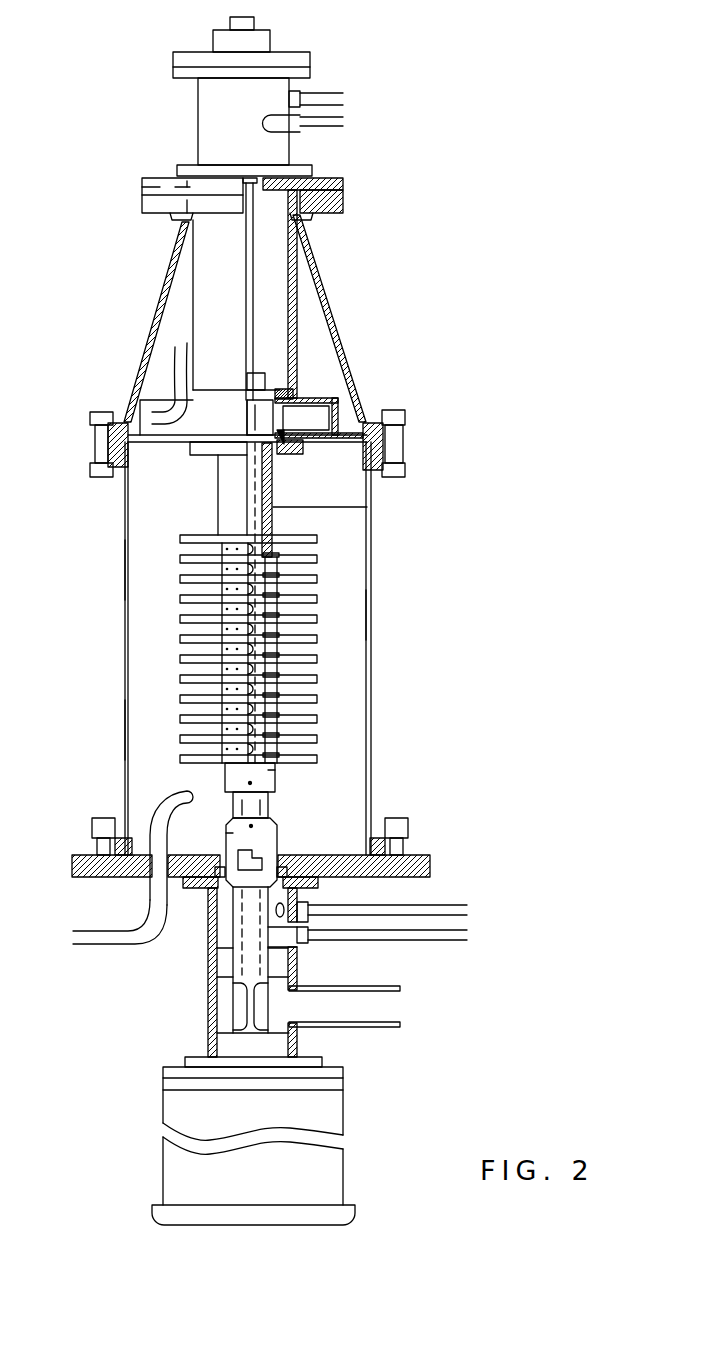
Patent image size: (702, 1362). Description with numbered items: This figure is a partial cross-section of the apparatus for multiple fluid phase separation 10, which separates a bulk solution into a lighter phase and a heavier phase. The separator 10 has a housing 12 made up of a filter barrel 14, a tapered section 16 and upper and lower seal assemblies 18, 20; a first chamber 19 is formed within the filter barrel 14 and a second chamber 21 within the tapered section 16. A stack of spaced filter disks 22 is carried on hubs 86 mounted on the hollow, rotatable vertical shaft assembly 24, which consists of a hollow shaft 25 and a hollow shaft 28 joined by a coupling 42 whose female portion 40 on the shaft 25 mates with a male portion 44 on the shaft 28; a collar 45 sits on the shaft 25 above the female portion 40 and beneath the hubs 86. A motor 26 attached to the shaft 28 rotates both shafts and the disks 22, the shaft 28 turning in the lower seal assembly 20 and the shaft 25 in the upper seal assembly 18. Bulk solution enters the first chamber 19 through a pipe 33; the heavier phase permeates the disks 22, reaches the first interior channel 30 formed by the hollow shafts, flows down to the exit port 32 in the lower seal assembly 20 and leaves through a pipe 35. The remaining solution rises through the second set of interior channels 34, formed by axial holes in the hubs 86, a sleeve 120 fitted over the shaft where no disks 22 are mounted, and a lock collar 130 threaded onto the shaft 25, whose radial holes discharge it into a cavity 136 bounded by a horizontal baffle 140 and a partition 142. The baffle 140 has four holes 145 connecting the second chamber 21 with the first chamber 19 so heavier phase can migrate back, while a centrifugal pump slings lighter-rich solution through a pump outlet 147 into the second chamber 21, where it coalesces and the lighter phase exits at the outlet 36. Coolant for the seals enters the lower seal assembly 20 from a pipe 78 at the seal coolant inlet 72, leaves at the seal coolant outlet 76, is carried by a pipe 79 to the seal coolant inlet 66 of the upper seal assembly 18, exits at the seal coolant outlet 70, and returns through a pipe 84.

The apparatus for multiple fluid phase separation 10 is at (124, 566).
The housing 12 is at (125, 735).
The filter barrel 14 is at (125, 630).
The tapered section 16 is at (152, 318).
The seal assembly 18 is at (198, 122).
The first chamber 19 is at (348, 615).
The seal assembly 20 is at (208, 960).
The second chamber 21 is at (340, 392).
The filter disks 22 is at (317, 578).
The shaft assembly 24 is at (280, 690).
The hollow shaft 25 is at (268, 805).
The motor 26 is at (343, 1117).
The hollow shaft 28 is at (233, 963).
The first interior channel 30 is at (240, 783).
The exit port 32 is at (233, 1007).
The pipe 33 is at (85, 945).
The second set of interior channels 34 is at (367, 507).
The pipe 35 is at (385, 1027).
The outlet 36 is at (142, 187).
The female portion 40 is at (278, 828).
The coupling 42 is at (226, 833).
The male portion 44 is at (250, 867).
The collar 45 is at (275, 777).
The seal coolant inlet 66 is at (300, 132).
The seal coolant outlet 70 is at (296, 90).
The seal coolant inlet 72 is at (278, 943).
The seal coolant outlet 76 is at (308, 902).
The pipe 78 is at (467, 938).
The pipe 79 is at (343, 124).
The pipe 84 is at (343, 98).
The hubs 86 is at (222, 665).
The sleeve 120 is at (218, 498).
The lock collar 130 is at (278, 446).
The cavity 136 is at (272, 418).
The horizontal baffle 140 is at (177, 442).
The partition 142 is at (290, 410).
The holes 145 is at (350, 432).
The pump outlet 147 is at (180, 383).